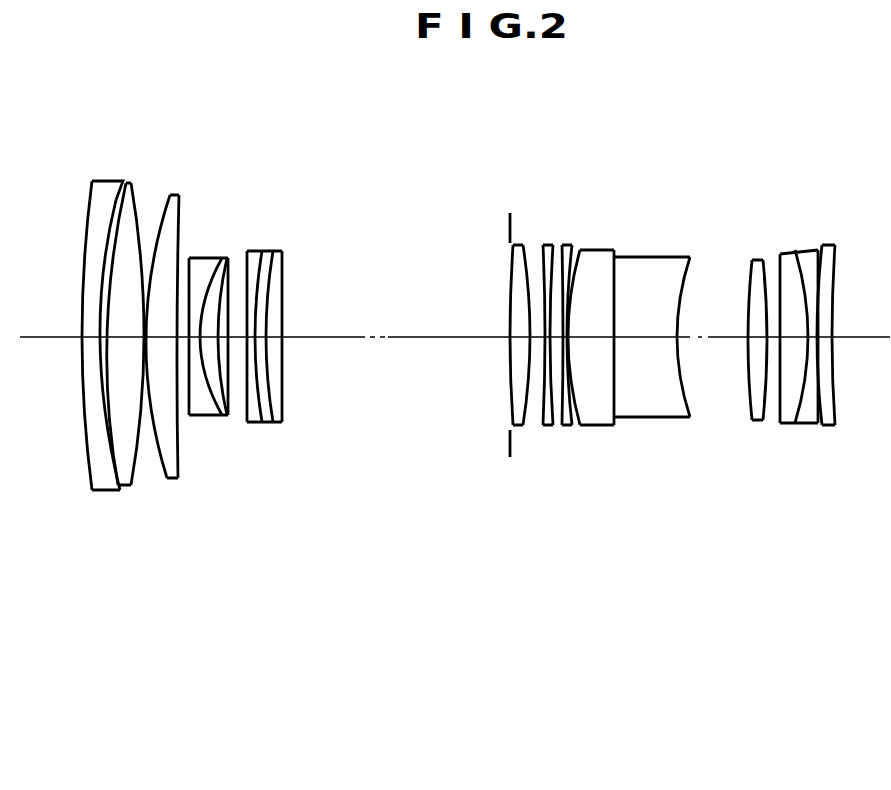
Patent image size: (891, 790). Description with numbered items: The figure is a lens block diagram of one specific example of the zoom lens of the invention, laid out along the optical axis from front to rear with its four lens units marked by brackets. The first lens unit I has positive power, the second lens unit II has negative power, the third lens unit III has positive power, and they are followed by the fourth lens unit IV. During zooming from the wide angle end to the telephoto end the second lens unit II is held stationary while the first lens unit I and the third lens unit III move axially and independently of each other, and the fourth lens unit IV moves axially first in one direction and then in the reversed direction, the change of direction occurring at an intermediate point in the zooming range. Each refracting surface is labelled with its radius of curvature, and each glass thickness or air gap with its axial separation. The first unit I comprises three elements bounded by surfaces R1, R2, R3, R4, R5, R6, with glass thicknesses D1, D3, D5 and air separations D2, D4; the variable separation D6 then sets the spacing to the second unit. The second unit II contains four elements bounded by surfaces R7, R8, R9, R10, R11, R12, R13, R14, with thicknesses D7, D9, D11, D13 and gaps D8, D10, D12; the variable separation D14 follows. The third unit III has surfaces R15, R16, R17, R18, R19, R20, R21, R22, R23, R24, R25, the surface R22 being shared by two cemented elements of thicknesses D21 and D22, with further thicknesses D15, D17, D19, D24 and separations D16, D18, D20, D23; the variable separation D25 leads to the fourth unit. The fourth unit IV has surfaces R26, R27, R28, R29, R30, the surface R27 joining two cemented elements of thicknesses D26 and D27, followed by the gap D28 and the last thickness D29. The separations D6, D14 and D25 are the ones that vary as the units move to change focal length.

The first lens unit I is at (180, 95).
The second lens unit II is at (311, 178).
The third lens unit III is at (755, 147).
The fourth lens unit IV is at (882, 170).
The radius of curvature R1 is at (93, 180).
The radius of curvature R2 is at (108, 180).
The radius of curvature R3 is at (127, 184).
The radius of curvature R4 is at (132, 184).
The radius of curvature R5 is at (170, 195).
The radius of curvature R6 is at (178, 195).
The radius of curvature R7 is at (190, 258).
The radius of curvature R8 is at (210, 258).
The radius of curvature R9 is at (230, 266).
The radius of curvature R10 is at (230, 258).
The radius of curvature R11 is at (255, 258).
The radius of curvature R12 is at (262, 252).
The radius of curvature R13 is at (277, 268).
The radius of curvature R14 is at (282, 266).
The radius of curvature R15 is at (512, 250).
The radius of curvature R16 is at (522, 245).
The radius of curvature R17 is at (540, 247).
The radius of curvature R18 is at (550, 245).
The radius of curvature R19 is at (561, 245).
The radius of curvature R20 is at (570, 245).
The radius of curvature R21 is at (582, 250).
The radius of curvature R22 is at (616, 250).
The radius of curvature R23 is at (690, 262).
The radius of curvature R24 is at (752, 263).
The radius of curvature R25 is at (763, 262).
The radius of curvature R26 is at (780, 255).
The radius of curvature R27 is at (795, 250).
The radius of curvature R28 is at (815, 250).
The radius of curvature R29 is at (825, 246).
The radius of curvature R30 is at (836, 250).
The axial thickness D1 is at (82, 340).
The air separation D2 is at (100, 340).
The axial thickness D3 is at (120, 342).
The air separation D4 is at (140, 440).
The axial thickness D5 is at (186, 416).
The variable air separation D6 is at (205, 416).
The axial thickness D7 is at (222, 423).
The air separation D8 is at (230, 416).
The axial thickness D9 is at (243, 422).
The air separation D10 is at (266, 422).
The axial thickness D11 is at (272, 422).
The air separation D12 is at (280, 403).
The axial thickness D13 is at (285, 350).
The variable air separation D14 is at (400, 340).
The axial thickness D15 is at (515, 350).
The air separation D16 is at (535, 350).
The axial thickness D17 is at (548, 352).
The air separation D18 is at (556, 352).
The axial thickness D19 is at (570, 352).
The air separation D20 is at (588, 352).
The axial thickness D21 is at (600, 352).
The axial thickness D22 is at (640, 340).
The air separation D23 is at (710, 340).
The axial thickness D24 is at (752, 350).
The variable air separation D25 is at (762, 350).
The axial thickness D26 is at (772, 350).
The axial thickness D27 is at (803, 350).
The air separation D28 is at (820, 350).
The axial thickness D29 is at (830, 347).